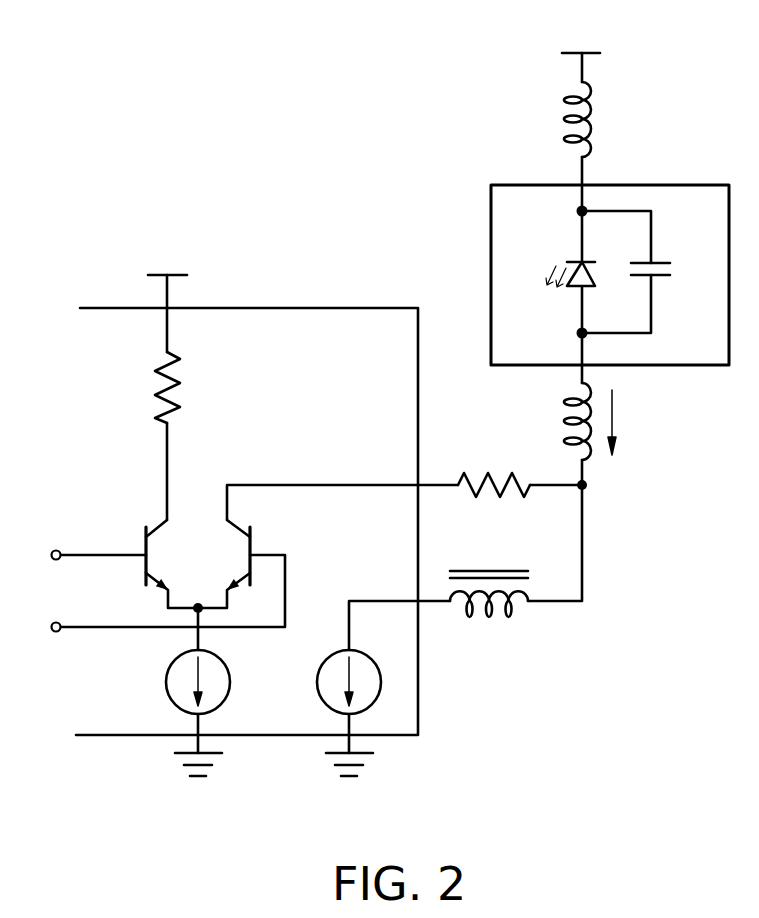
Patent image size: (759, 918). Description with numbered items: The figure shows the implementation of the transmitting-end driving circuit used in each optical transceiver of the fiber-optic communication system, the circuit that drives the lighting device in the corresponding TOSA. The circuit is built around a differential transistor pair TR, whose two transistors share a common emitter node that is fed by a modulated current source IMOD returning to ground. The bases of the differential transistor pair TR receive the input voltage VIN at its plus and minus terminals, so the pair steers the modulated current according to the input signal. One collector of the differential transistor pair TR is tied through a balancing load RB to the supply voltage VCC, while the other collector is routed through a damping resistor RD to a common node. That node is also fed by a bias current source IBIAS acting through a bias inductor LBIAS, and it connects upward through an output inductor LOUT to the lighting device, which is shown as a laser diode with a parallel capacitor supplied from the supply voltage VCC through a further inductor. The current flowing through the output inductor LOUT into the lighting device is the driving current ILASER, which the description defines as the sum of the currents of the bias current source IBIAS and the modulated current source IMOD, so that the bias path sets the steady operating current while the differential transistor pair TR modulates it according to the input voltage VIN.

The supply voltage VCC is at (373, 146).
The balancing load RB is at (190, 387).
The differential transistor pair TR is at (145, 486).
The input voltage VIN is at (149, 589).
The damping resistor RD is at (494, 501).
The output inductor LOUT is at (545, 421).
The driving current ILASER is at (653, 422).
The bias inductor LBIAS is at (489, 616).
The modulated current source IMOD is at (167, 682).
The bias current source IBIAS is at (317, 682).